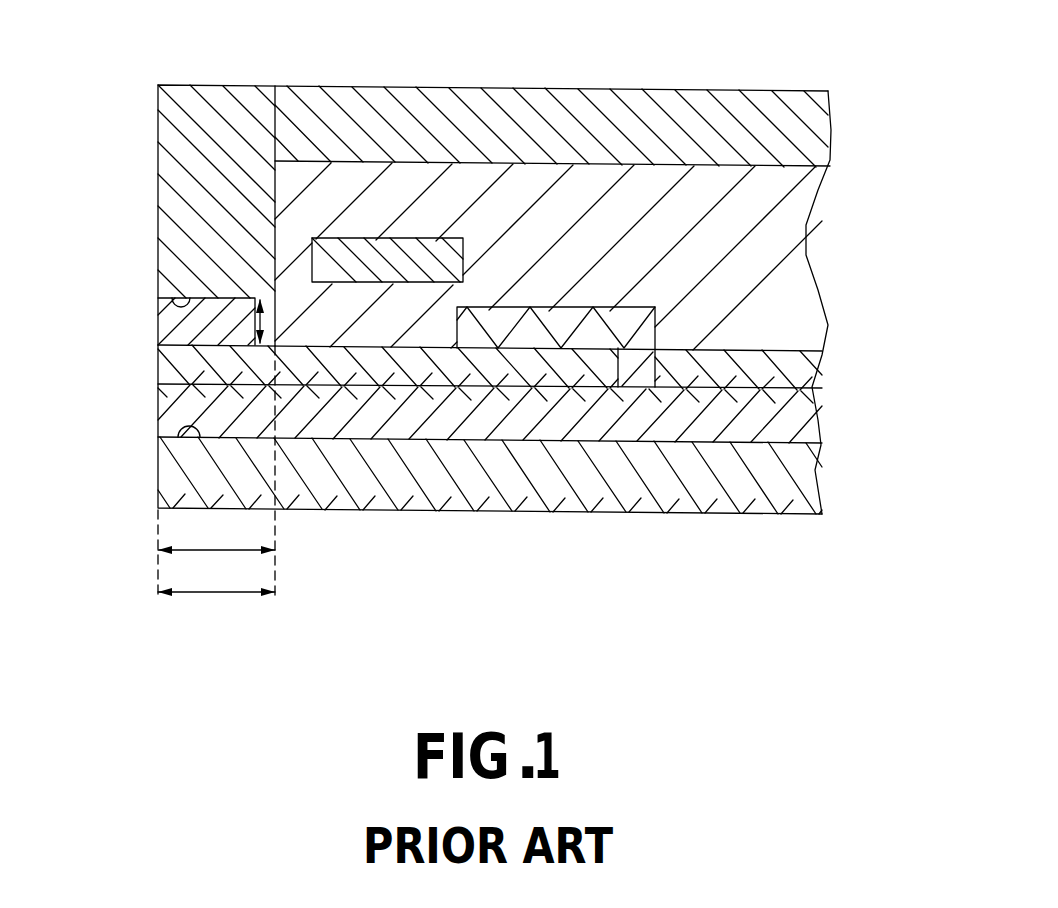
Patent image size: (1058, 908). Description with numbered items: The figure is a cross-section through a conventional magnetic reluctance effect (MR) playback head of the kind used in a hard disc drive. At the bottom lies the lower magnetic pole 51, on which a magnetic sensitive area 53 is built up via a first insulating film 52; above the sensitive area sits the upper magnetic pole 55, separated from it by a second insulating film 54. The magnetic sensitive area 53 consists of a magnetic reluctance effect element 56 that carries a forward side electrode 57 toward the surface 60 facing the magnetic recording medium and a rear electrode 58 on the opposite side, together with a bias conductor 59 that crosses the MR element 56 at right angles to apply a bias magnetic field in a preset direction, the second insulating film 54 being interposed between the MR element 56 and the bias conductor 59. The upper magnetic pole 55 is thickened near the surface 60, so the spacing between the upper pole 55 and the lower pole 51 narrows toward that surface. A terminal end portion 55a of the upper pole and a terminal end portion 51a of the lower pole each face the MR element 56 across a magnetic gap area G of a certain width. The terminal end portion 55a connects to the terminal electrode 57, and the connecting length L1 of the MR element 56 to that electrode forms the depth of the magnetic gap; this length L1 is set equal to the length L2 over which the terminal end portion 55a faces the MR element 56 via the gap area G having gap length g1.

The lower magnetic pole 51 is at (797, 482).
The terminal end portion of the lower magnetic pole 51a is at (178, 433).
The first insulating film 52 is at (788, 420).
The magnetic sensitive area 53 is at (682, 306).
The second insulating film 54 is at (790, 222).
The upper magnetic pole 55 is at (810, 123).
The terminal end portion of the upper magnetic pole 55a is at (157, 250).
The magnetic reluctance effect element 56 is at (432, 367).
The forward side electrode 57 is at (185, 322).
The rear electrode 58 is at (643, 347).
The bias conductor 59 is at (465, 243).
The surface facing the magnetic recording medium 60 is at (157, 128).
The magnetic gap area G is at (152, 296).
The gap length g1 is at (276, 330).
The connecting length L1 is at (216, 473).
The facing length L2 is at (216, 574).